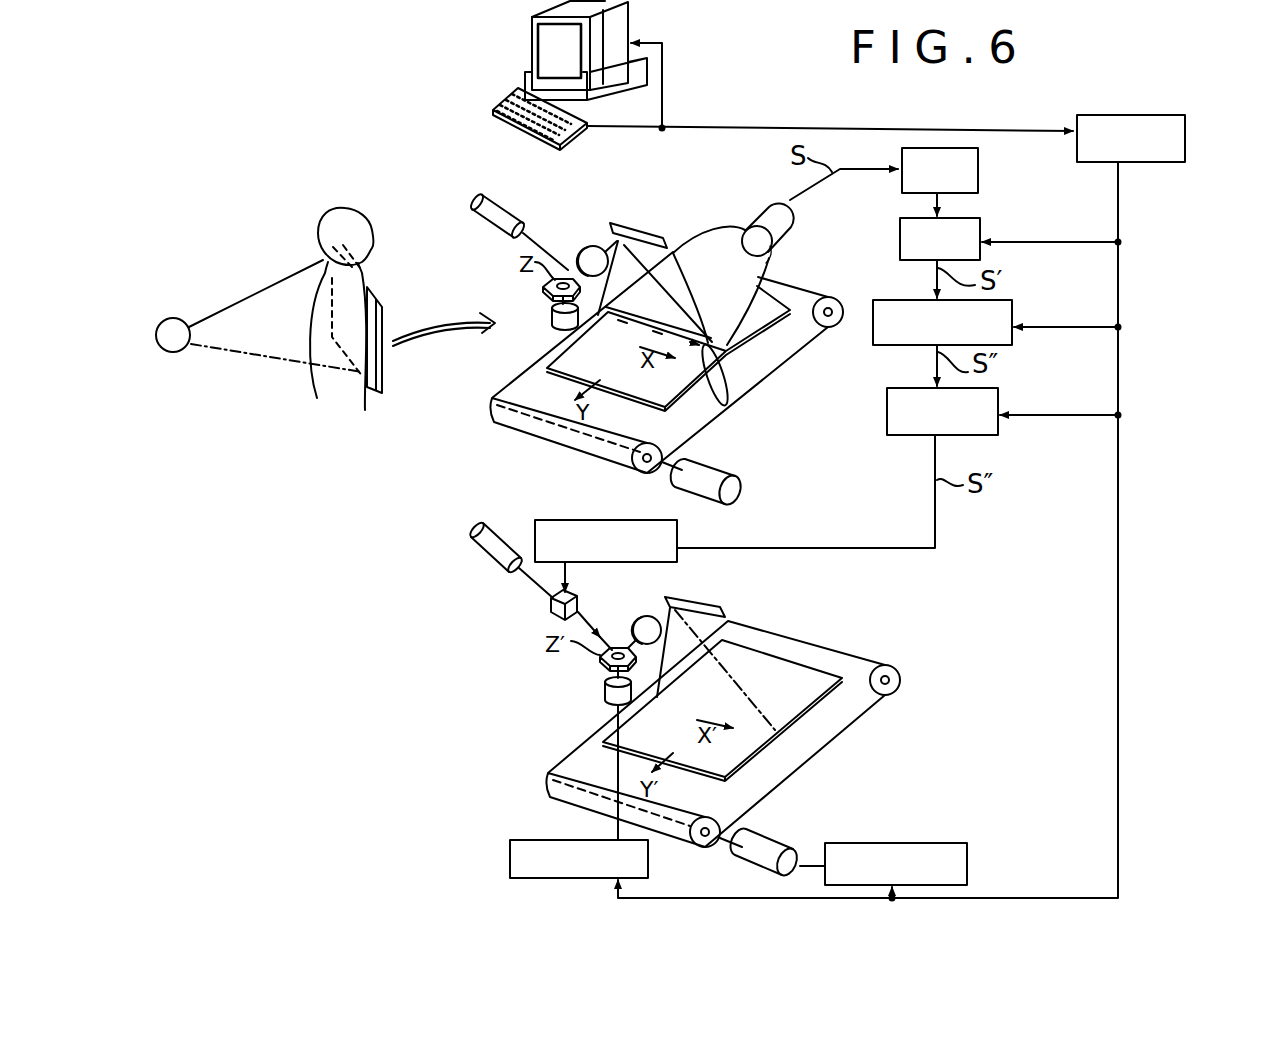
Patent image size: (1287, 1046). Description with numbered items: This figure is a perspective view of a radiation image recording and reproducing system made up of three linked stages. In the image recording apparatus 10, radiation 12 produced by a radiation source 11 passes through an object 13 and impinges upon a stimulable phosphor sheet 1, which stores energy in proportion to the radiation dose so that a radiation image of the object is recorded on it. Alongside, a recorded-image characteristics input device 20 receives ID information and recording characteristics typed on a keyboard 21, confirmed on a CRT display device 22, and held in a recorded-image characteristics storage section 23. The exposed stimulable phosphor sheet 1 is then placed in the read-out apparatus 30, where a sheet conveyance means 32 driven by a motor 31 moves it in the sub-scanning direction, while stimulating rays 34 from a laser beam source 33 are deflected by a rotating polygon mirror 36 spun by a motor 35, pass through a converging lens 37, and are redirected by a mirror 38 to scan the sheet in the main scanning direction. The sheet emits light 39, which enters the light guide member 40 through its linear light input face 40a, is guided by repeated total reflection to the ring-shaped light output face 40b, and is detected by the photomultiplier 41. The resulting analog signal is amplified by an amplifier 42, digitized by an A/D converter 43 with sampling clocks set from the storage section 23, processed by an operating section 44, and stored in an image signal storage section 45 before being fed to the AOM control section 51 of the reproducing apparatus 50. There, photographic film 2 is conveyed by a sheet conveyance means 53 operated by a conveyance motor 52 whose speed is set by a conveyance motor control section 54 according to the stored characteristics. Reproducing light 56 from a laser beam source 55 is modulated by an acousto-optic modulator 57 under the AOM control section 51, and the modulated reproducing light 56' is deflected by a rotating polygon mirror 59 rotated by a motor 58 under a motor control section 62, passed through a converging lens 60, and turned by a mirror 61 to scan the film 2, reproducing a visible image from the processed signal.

The stimulable phosphor sheet 1 is at (385, 308).
The photographic film 2 is at (753, 742).
The image recording apparatus 10 is at (277, 232).
The radiation source 11 is at (176, 319).
The radiation 12 is at (256, 292).
The object 13 is at (346, 212).
The recorded-image characteristics input device 20 is at (514, 62).
The keyboard 21 is at (500, 102).
The CRT display device 22 is at (532, 40).
The recorded-image characteristics storage section 23 is at (1188, 130).
The read-out apparatus 30 is at (640, 205).
The motor 31 is at (738, 492).
The sheet conveyance means 32 is at (700, 430).
The laser beam source 33 is at (503, 213).
The stimulating rays 34 is at (546, 252).
The motor 35 is at (552, 312).
The rotating polygon mirror 36 is at (545, 291).
The converging lens 37 is at (592, 244).
The mirror 38 is at (652, 234).
The emitted light 39 is at (620, 326).
The light guide member 40 is at (712, 258).
The light input face 40a is at (690, 379).
The light output face 40b is at (772, 260).
The photomultiplier 41 is at (757, 212).
The amplifier 42 is at (980, 176).
The A/D converter 43 is at (982, 222).
The operating section 44 is at (1014, 312).
The image signal storage section 45 is at (1002, 400).
The reproducing apparatus 50 is at (507, 498).
The AOM control section 51 is at (578, 520).
The conveyance motor 52 is at (787, 823).
The sheet conveyance means 53 is at (720, 778).
The conveyance motor control section 54 is at (912, 843).
The laser beam source 55 is at (484, 550).
The reproducing light 56 is at (508, 593).
The modulated reproducing light 56' is at (607, 620).
The acousto-optic modulator 57 is at (580, 600).
The motor 58 is at (603, 690).
The rotating polygon mirror 59 is at (600, 669).
The converging lens 60 is at (648, 616).
The mirror 61 is at (708, 604).
The motor control section 62 is at (512, 840).